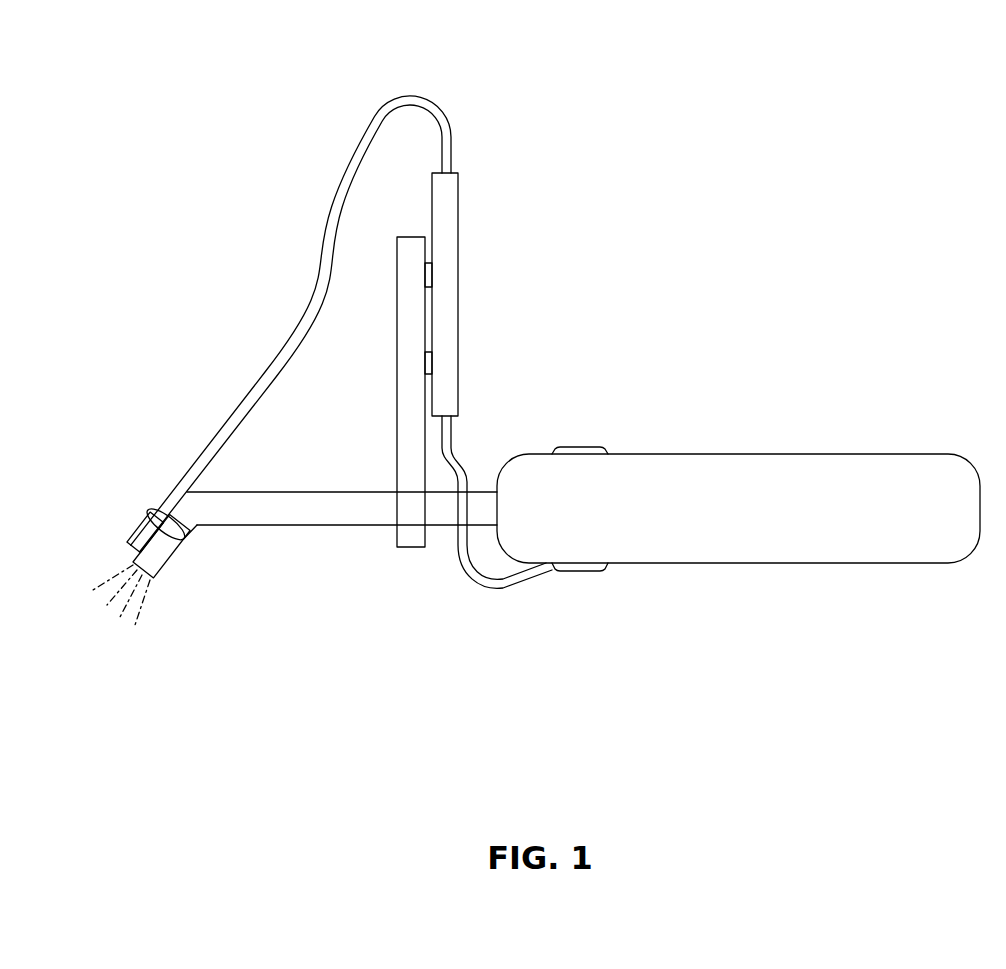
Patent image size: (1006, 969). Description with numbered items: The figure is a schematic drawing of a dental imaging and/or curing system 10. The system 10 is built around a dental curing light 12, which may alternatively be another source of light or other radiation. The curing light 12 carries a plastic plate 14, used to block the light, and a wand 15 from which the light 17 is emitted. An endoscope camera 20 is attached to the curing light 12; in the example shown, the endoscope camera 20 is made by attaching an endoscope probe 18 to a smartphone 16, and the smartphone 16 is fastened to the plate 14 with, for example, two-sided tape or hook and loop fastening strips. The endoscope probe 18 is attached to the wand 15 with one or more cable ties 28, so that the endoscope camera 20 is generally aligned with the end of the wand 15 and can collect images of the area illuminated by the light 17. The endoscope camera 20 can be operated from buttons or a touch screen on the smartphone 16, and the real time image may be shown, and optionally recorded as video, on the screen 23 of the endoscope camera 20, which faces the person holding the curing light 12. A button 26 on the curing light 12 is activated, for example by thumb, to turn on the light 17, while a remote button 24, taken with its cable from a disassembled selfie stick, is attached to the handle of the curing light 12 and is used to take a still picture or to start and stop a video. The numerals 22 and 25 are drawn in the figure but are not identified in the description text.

The dental imaging and/or curing system 10 is at (334, 690).
The dental curing light 12 is at (757, 454).
The plastic plate 14 is at (397, 432).
The wand 15 is at (333, 525).
The smartphone 16 is at (458, 253).
The light 17 is at (139, 611).
The endoscope probe 18 is at (292, 337).
The endoscope camera 20 is at (412, 45).
The lower connector clip 22 is at (458, 355).
The screen 23 is at (458, 307).
The remote button 24 is at (583, 571).
The hose 25 is at (492, 588).
The button 26 is at (582, 447).
The cable tie 28 is at (147, 511).